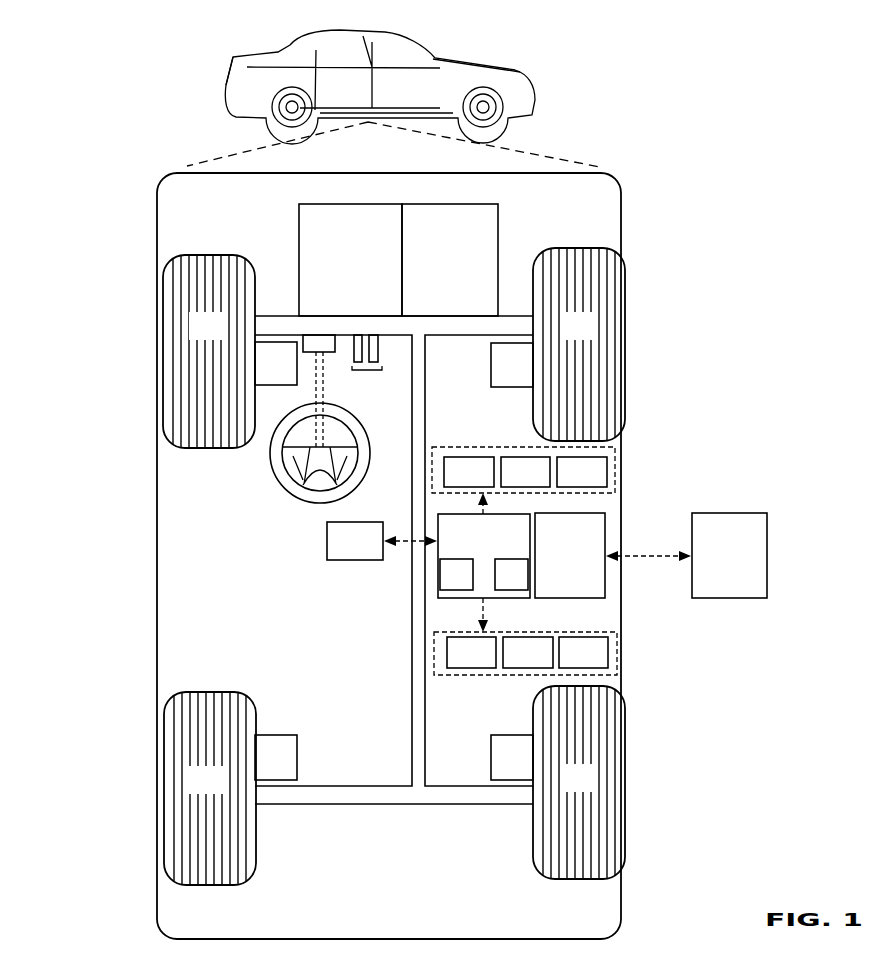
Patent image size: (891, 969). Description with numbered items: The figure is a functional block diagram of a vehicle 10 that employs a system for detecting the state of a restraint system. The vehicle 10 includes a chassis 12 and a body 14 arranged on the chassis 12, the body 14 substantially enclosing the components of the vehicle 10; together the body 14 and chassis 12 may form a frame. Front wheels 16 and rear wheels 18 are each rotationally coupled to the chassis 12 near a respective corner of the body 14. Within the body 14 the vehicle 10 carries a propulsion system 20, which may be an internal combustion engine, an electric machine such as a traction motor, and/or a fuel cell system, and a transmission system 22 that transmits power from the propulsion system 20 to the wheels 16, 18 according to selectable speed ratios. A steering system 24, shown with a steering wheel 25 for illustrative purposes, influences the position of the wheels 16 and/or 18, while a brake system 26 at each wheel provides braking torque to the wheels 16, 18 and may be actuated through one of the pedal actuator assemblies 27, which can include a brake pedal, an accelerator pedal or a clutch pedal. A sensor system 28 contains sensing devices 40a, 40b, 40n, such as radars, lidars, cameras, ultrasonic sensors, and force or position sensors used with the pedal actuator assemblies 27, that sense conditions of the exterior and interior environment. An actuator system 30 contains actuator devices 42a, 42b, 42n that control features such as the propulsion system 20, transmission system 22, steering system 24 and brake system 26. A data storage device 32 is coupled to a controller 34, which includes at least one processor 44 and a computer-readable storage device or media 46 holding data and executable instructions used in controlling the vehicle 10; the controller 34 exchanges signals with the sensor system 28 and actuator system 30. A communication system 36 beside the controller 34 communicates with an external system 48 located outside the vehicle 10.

The vehicle 10 is at (232, 78).
The chassis 12 is at (418, 806).
The body 14 is at (162, 518).
The front wheels 16 is at (195, 334).
The rear wheels 18 is at (195, 789).
The propulsion system 20 is at (338, 267).
The transmission system 22 is at (436, 268).
The steering system 24 is at (291, 518).
The steering wheel 25 is at (371, 453).
The brake system 26 is at (264, 372).
The pedal actuator assemblies 27 is at (367, 362).
The sensor system 28 is at (478, 447).
The actuator system 30 is at (460, 676).
The data storage device 32 is at (343, 550).
The controller 34 is at (475, 556).
The communication system 36 is at (558, 565).
The sensing device 40a is at (453, 481).
The sensing device 40b is at (509, 481).
The sensing device 40n is at (566, 481).
The actuator device 42a is at (455, 662).
The actuator device 42b is at (512, 662).
The actuator device 42n is at (567, 662).
The processor 44 is at (468, 583).
The computer-readable storage device or media 46 is at (524, 583).
The external system 48 is at (717, 565).